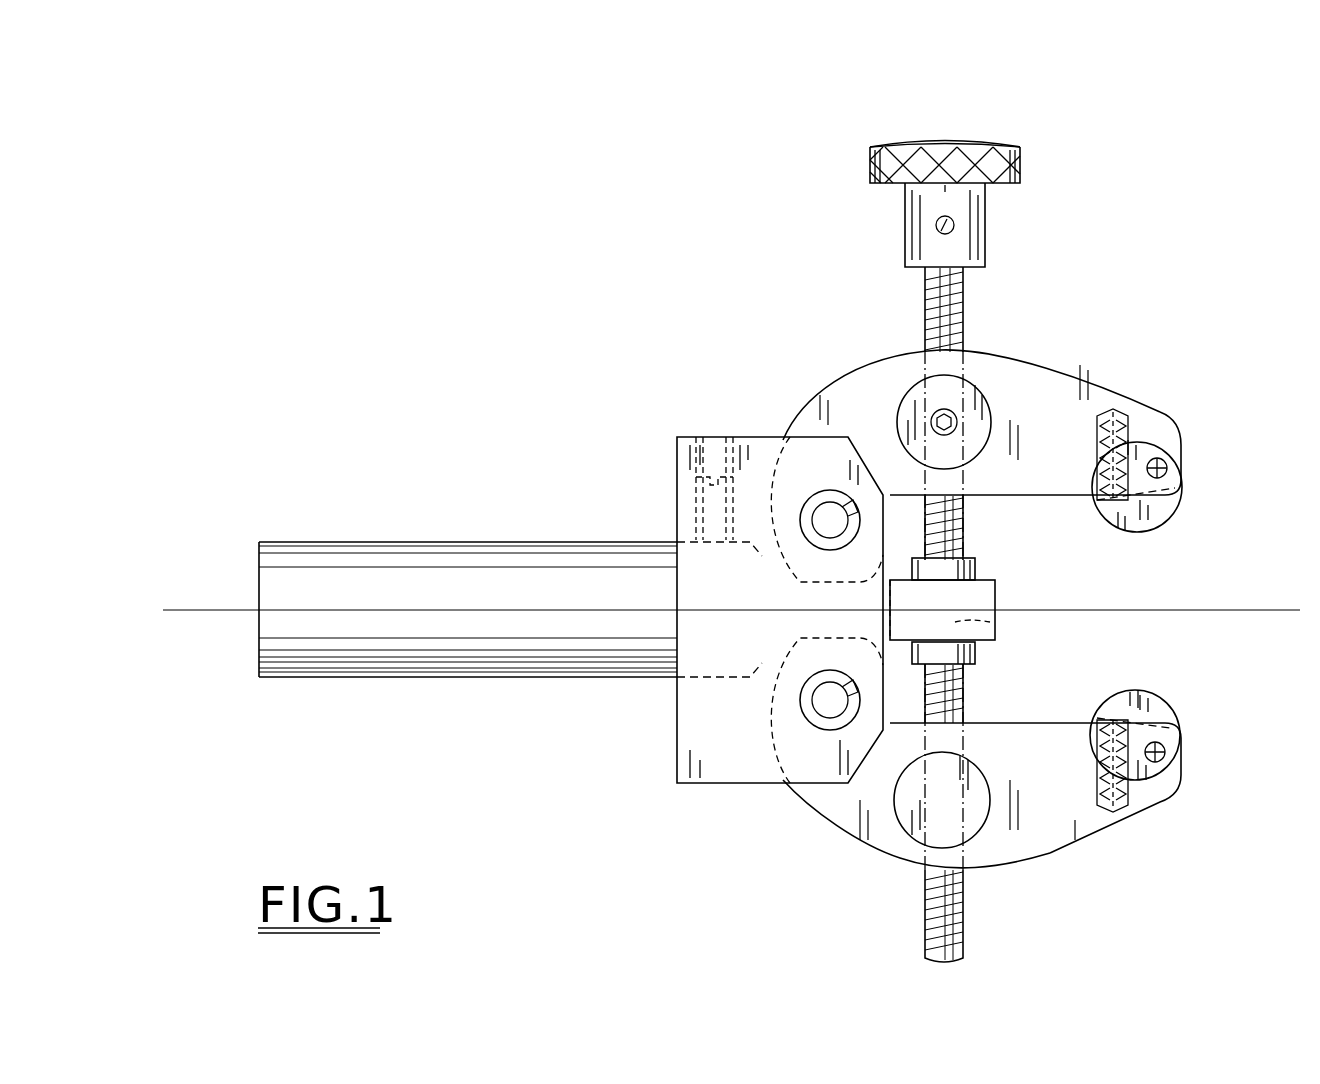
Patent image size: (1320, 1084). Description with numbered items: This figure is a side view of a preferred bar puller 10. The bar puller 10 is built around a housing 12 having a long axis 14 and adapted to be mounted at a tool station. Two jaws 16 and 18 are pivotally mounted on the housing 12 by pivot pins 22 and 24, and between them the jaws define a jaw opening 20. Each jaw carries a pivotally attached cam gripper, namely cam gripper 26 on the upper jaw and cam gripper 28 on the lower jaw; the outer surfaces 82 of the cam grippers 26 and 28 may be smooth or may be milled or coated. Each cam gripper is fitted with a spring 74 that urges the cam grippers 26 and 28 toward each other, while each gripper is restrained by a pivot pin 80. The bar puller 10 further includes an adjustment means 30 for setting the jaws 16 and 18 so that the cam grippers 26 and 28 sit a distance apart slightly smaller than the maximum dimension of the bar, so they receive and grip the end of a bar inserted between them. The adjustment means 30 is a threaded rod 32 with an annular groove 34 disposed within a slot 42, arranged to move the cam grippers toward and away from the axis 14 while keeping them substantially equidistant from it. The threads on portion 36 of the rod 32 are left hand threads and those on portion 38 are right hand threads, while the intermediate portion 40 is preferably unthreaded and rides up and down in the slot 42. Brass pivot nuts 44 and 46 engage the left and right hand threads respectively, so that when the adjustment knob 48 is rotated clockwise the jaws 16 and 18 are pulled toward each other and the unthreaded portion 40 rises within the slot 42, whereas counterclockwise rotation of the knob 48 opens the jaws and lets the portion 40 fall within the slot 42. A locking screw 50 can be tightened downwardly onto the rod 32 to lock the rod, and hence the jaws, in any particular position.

The bar puller 10 is at (1068, 142).
The housing 12 is at (663, 455).
The long axis 14 is at (220, 608).
The jaw 16 is at (1068, 385).
The jaw 18 is at (1078, 828).
The jaw opening 20 is at (1164, 600).
The pivot pin 22 is at (835, 490).
The pivot pin 24 is at (832, 730).
The cam gripper 26 is at (1168, 508).
The cam gripper 28 is at (1168, 712).
The means for adjusting the jaws 30 is at (856, 168).
The threaded rod 32 is at (966, 325).
The annular groove 34 is at (950, 596).
The left hand threaded portion 36 is at (922, 314).
The right hand threaded portion 38 is at (965, 690).
The intermediate portion 40 is at (990, 624).
The slot 42 is at (978, 574).
The brass pivot nut 44 is at (985, 414).
The brass pivot nut 46 is at (972, 814).
The adjustment knob 48 is at (1022, 178).
The locking screw 50 is at (932, 418).
The spring 74 is at (1128, 414).
The pivot pin 80 is at (1168, 468).
The outer surface 82 is at (1138, 533).